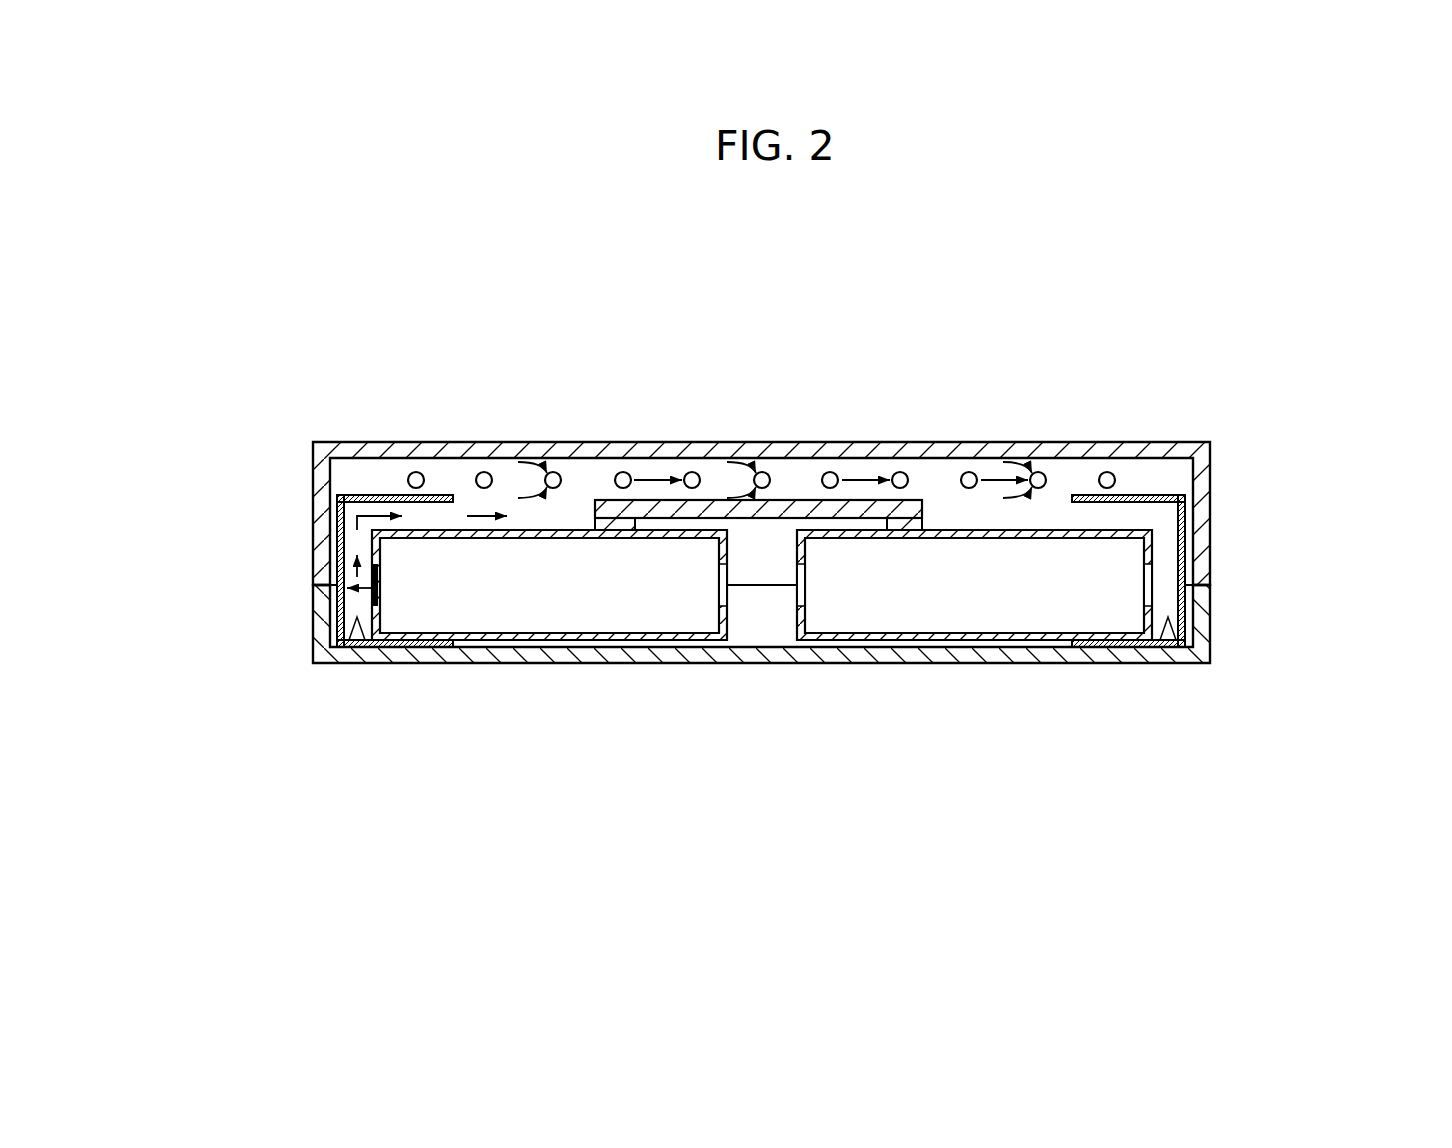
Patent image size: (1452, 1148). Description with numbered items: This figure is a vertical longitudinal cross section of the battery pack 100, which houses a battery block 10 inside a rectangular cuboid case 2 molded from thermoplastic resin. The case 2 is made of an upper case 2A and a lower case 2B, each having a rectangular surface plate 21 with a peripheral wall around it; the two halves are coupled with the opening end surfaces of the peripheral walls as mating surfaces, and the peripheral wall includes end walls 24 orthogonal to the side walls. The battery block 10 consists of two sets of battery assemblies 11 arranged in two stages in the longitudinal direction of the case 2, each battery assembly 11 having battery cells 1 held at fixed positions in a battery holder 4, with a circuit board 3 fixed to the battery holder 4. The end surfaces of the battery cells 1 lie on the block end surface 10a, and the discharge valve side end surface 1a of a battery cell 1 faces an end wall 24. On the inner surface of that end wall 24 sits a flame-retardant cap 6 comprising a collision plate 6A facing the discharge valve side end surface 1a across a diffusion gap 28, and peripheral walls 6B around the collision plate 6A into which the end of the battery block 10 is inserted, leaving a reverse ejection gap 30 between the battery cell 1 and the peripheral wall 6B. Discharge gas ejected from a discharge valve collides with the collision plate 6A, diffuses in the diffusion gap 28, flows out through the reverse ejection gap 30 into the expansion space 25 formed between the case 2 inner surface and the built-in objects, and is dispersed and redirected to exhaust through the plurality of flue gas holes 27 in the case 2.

The battery pack 100 is at (1229, 312).
The case 2 is at (823, 491).
The upper case 2A is at (1260, 500).
The lower case 2B is at (840, 624).
The end wall 24 is at (318, 485).
The surface plate 21 is at (638, 452).
The flue gas holes 27 is at (484, 472).
The circuit board 3 is at (718, 512).
The reverse ejection gap 30 is at (436, 520).
The expansion space 25 is at (802, 479).
The flame-retardant cap 6 is at (670, 571).
The collision plate 6A is at (338, 557).
The peripheral walls 6B is at (392, 495).
The diffusion gap 28 is at (356, 642).
The block end surface 10a is at (317, 520).
The battery block 10 is at (697, 704).
The battery assembly 11 is at (697, 673).
The battery cell 1 is at (613, 600).
The battery holder 4 is at (503, 537).
The discharge valve side end surface 1a is at (358, 609).